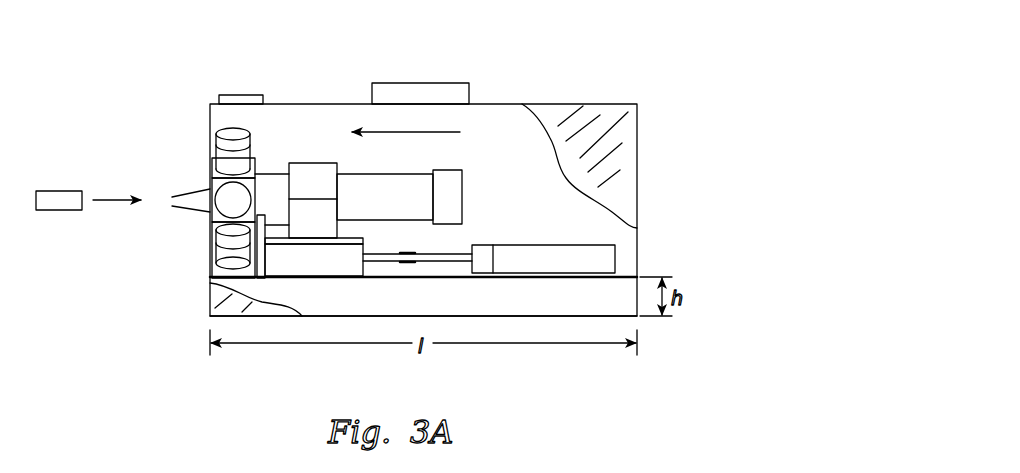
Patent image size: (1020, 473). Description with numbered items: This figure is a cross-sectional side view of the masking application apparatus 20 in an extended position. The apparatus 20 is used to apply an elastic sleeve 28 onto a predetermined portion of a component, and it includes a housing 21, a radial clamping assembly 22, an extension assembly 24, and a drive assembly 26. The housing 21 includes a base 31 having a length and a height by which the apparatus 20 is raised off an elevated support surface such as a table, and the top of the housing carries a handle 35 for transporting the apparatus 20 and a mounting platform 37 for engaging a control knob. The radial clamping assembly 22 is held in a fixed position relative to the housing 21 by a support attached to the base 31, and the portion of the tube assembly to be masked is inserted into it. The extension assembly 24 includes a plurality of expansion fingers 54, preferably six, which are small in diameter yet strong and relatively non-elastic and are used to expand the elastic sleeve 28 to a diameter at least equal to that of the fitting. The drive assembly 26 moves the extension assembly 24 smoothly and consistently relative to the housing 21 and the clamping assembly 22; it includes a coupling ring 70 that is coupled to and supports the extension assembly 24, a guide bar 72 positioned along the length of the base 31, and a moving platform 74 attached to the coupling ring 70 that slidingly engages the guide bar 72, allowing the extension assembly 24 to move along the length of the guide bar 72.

The masking application apparatus 20 is at (613, 72).
The housing 21 is at (637, 213).
The radial clamping assembly 22 is at (215, 216).
The extension assembly 24 is at (390, 186).
The drive assembly 26 is at (487, 292).
The elastic sleeve 28 is at (62, 191).
The base 31 is at (615, 317).
The handle 35 is at (433, 83).
The mounting platform 37 is at (232, 93).
The expansion fingers 54 is at (185, 182).
The coupling ring 70 is at (300, 162).
The guide bar 72 is at (388, 267).
The moving platform 74 is at (291, 260).